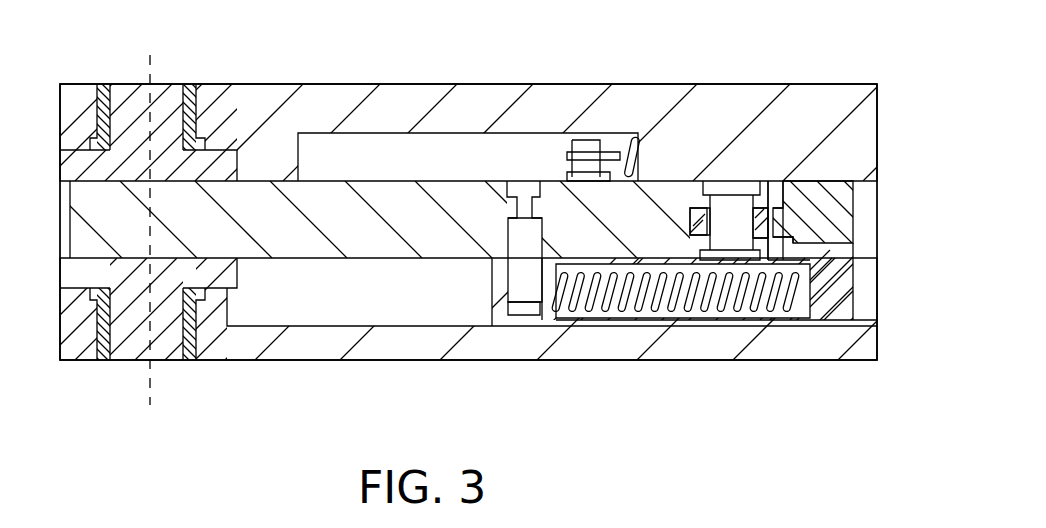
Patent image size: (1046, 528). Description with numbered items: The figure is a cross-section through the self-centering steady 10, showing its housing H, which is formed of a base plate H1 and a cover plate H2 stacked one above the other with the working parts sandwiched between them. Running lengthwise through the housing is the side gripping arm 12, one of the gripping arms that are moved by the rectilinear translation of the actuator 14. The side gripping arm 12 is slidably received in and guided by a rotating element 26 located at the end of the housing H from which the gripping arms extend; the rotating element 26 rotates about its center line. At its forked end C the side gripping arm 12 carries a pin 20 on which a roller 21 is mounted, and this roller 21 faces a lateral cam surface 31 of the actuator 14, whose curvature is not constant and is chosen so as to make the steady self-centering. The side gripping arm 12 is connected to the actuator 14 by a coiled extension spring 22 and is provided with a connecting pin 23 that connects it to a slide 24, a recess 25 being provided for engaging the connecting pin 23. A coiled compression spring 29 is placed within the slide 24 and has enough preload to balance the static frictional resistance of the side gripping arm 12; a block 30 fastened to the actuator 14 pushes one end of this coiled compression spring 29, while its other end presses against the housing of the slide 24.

The self-centering steady 10 is at (206, 59).
The side gripping arm 12 is at (298, 214).
The actuator 14 is at (828, 233).
The pin 20 is at (743, 200).
The roller 21 is at (710, 213).
The coiled extension spring 22 is at (609, 150).
The connecting pin 23 is at (517, 232).
The slide 24 is at (544, 300).
The recess 25 is at (518, 306).
The rotating element 26 is at (123, 74).
The coiled compression spring 29 is at (663, 308).
The block 30 is at (822, 302).
The lateral cam surface 31 is at (773, 207).
The forked end C is at (770, 197).
The housing H is at (554, 80).
The base plate H1 is at (386, 346).
The cover plate H2 is at (391, 86).